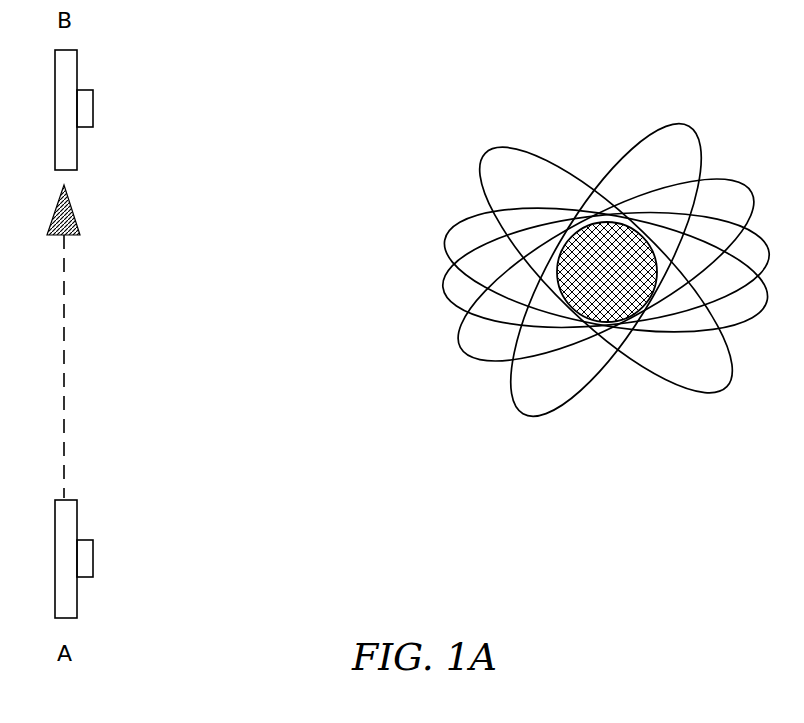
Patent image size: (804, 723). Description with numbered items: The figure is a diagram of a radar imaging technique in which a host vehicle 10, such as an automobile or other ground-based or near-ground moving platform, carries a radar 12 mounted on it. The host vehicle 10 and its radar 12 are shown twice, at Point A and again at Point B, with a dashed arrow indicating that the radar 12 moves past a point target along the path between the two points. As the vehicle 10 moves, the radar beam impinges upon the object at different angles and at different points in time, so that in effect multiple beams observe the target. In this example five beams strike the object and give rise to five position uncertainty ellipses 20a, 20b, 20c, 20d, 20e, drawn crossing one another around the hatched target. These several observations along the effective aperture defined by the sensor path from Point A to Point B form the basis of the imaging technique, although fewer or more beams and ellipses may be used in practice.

The host vehicle 10 is at (77, 155).
The radar 12 is at (88, 101).
The position uncertainty ellipse 20a is at (521, 414).
The position uncertainty ellipse 20b is at (470, 362).
The position uncertainty ellipse 20c is at (443, 289).
The position uncertainty ellipse 20d is at (448, 238).
The position uncertainty ellipse 20e is at (484, 162).